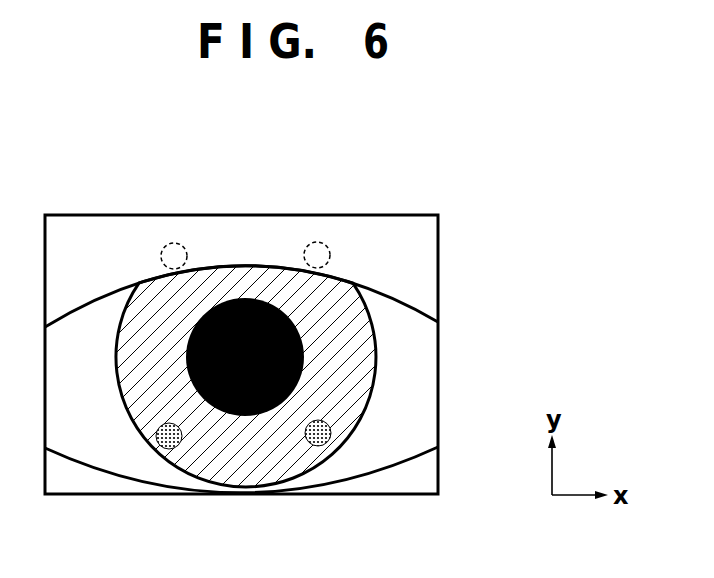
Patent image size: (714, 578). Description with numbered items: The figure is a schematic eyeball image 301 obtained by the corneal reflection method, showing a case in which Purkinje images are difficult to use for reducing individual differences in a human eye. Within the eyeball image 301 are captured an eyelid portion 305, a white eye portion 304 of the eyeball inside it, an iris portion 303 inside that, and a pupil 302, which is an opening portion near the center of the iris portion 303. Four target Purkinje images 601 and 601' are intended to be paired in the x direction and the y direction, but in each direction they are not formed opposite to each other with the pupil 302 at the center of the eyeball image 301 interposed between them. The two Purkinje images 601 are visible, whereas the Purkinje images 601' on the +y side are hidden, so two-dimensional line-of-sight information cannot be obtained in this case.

The eyeball image 301 is at (129, 169).
The pupil 302 is at (302, 367).
The iris portion 303 is at (247, 468).
The white eye portion 304 is at (418, 431).
The eyelid portion 305 is at (81, 228).
The Purkinje image 601 is at (244, 483).
The Purkinje image on the +y side 601' is at (247, 218).